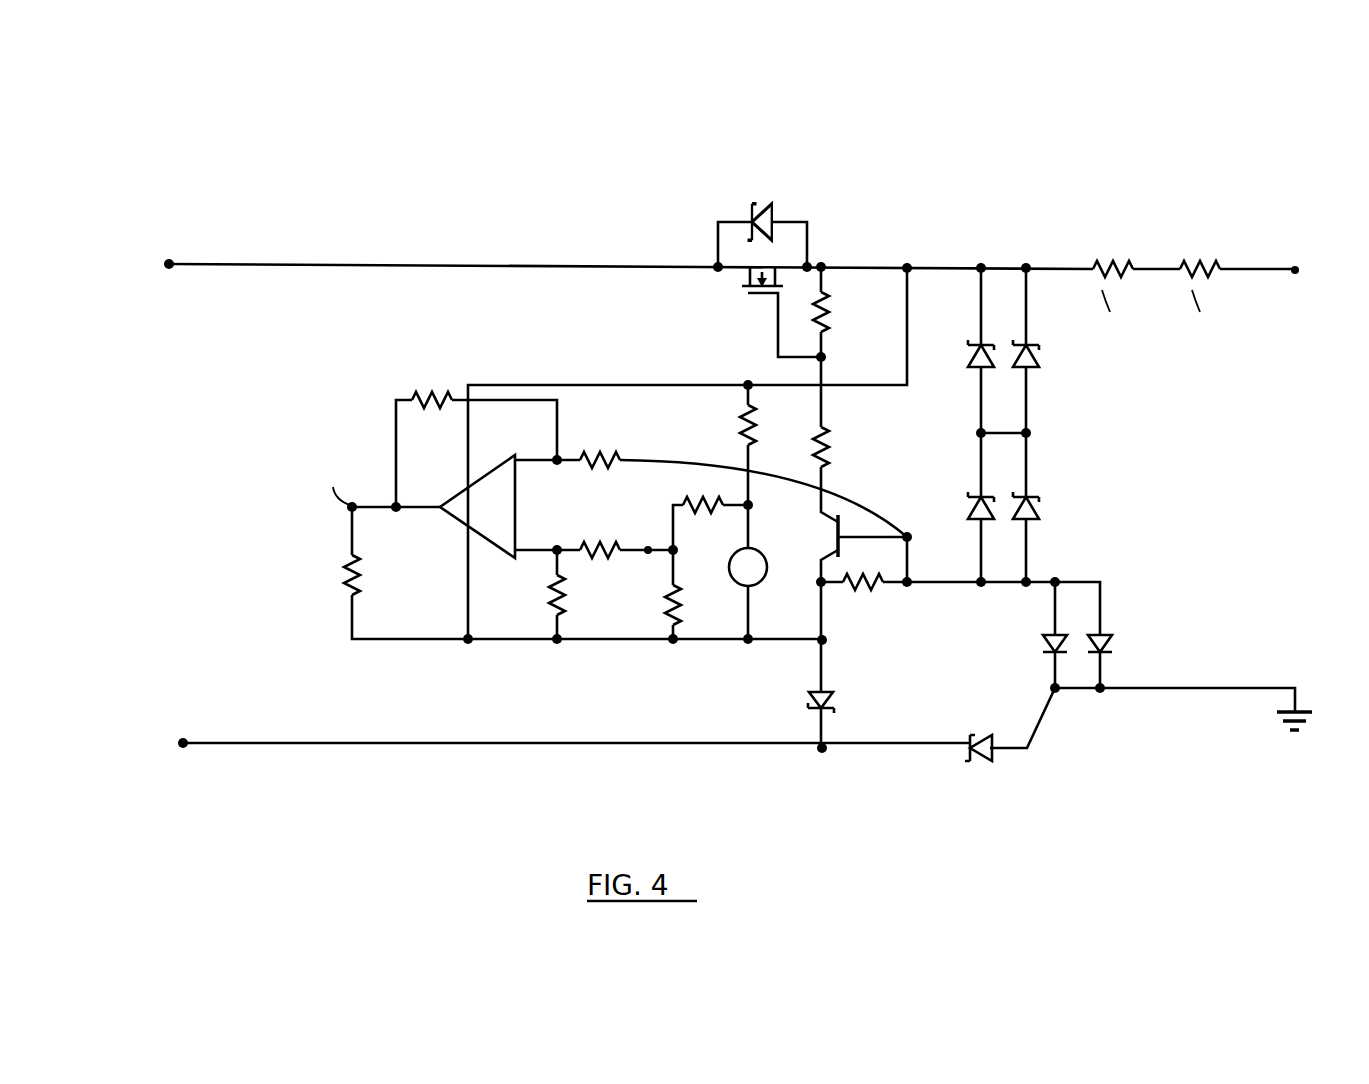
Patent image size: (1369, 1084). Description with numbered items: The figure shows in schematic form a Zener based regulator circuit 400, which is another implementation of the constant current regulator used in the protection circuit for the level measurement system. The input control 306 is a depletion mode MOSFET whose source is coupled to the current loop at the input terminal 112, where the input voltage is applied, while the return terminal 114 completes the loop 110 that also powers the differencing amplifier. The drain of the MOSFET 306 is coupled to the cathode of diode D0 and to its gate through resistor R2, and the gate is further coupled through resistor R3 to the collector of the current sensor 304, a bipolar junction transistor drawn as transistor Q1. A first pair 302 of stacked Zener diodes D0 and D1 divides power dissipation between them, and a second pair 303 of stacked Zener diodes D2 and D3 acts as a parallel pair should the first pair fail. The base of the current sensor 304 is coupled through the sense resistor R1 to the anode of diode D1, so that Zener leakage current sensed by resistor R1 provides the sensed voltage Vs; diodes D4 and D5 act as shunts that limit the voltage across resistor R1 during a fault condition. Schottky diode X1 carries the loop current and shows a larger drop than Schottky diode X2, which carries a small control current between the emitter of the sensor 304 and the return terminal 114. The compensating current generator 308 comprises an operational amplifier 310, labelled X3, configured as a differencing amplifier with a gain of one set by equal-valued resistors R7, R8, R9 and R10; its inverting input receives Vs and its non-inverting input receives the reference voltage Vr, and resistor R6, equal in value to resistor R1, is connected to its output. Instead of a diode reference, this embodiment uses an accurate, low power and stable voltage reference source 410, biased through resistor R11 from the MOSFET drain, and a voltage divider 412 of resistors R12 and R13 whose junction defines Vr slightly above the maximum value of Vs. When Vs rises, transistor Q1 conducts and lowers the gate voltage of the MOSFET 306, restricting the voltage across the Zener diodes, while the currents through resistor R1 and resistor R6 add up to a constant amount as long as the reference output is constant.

The Zener based regulator circuit 400 is at (1095, 165).
The input control 306 is at (782, 186).
The terminal 112 is at (173, 270).
The return terminal 114 is at (186, 748).
The loop 110 is at (200, 485).
The first pair of diodes 302 is at (926, 410).
The second pair of diodes 303 is at (1095, 443).
The current sensor 304 is at (900, 634).
The compensating current generator 308 is at (580, 527).
The operational amplifier 310 is at (502, 509).
The voltage reference source 410 is at (738, 590).
The voltage divider 412 is at (654, 634).
The sense resistor R1 is at (866, 592).
The resistor R2 is at (828, 322).
The resistor R3 is at (826, 445).
The resistor R6 is at (358, 590).
The resistor R7 is at (437, 397).
The resistor R8 is at (614, 532).
The resistor R9 is at (561, 598).
The resistor R10 is at (600, 457).
The resistor R11 is at (744, 410).
The resistor R12 is at (706, 500).
The resistor R13 is at (668, 612).
The Zener diode D0 is at (972, 366).
The Zener diode D1 is at (972, 518).
The Zener diode D2 is at (1036, 370).
The Zener diode D3 is at (1036, 520).
The diode D4 is at (1043, 640).
The diode D5 is at (1115, 642).
The Schottky diode X1 is at (984, 775).
The Schottky diode X2 is at (836, 700).
The operational amplifier X3 is at (516, 504).
The transistor Q1 is at (824, 540).